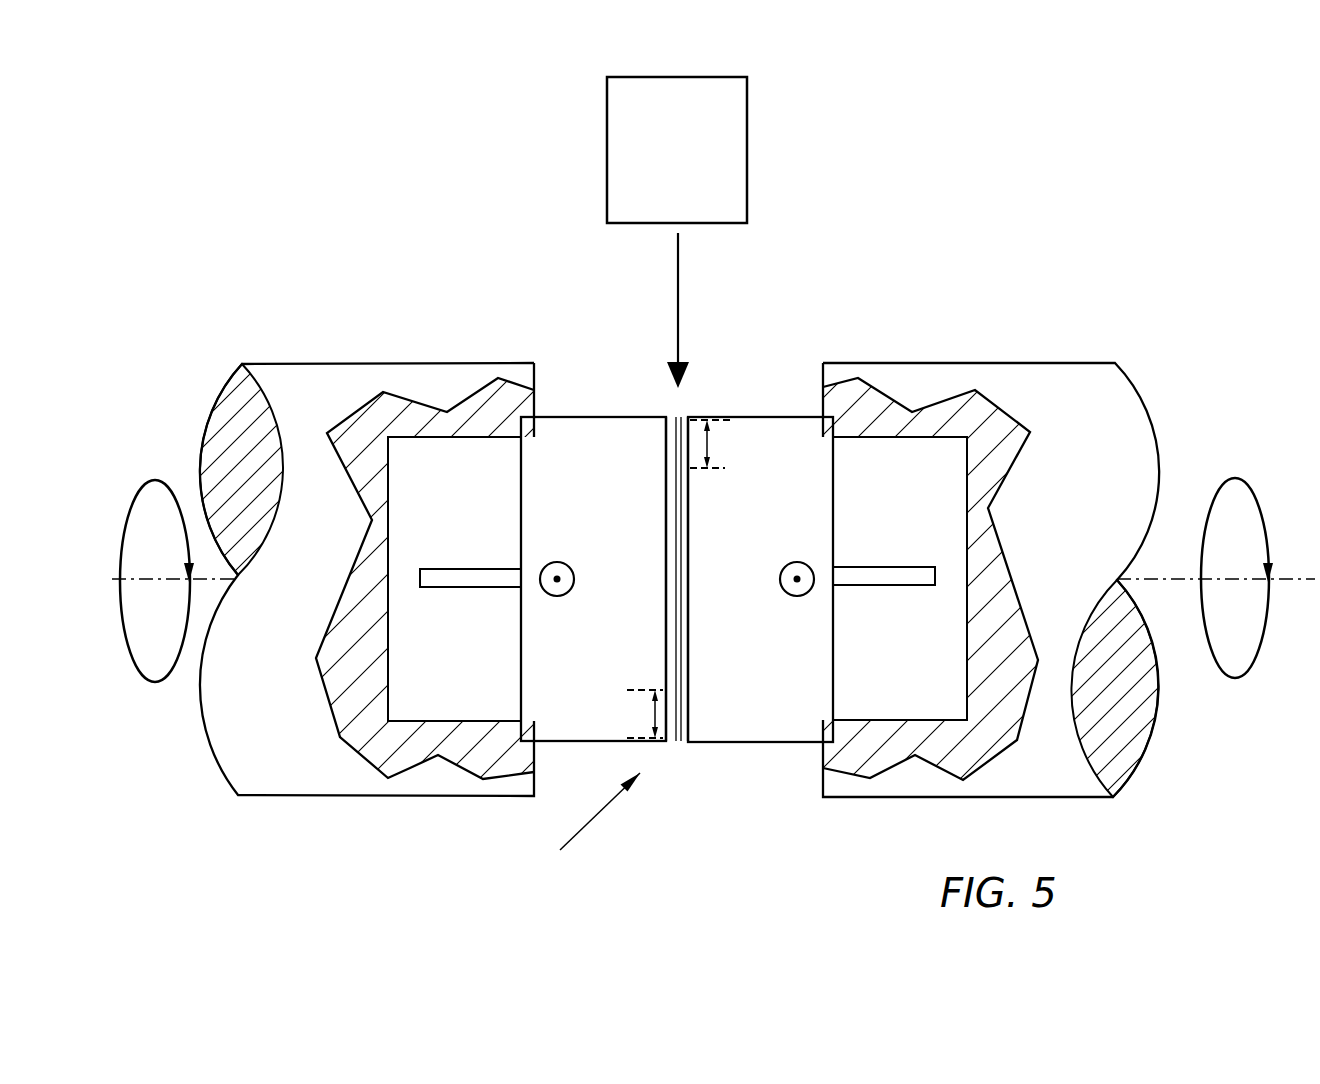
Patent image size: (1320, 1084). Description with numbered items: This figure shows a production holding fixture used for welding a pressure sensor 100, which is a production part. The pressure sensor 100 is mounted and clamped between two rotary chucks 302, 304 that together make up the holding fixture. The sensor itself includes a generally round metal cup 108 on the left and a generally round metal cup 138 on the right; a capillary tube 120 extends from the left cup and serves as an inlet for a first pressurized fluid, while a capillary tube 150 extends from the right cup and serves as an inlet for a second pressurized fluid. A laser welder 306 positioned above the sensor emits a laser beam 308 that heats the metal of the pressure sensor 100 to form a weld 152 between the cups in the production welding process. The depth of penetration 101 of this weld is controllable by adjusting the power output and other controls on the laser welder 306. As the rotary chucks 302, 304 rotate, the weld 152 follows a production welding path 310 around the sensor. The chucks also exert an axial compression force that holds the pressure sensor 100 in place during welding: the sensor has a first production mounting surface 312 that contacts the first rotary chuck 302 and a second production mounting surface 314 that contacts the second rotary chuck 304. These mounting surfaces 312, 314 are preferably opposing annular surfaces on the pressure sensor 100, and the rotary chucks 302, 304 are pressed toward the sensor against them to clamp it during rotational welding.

The pressure sensor 100 is at (666, 630).
The depth of penetration 101 is at (710, 447).
The metal cup 108 is at (623, 501).
The capillary tube 120 is at (478, 569).
The metal cup 138 is at (776, 502).
The capillary tube 150 is at (860, 567).
The weld 152 is at (672, 742).
The first rotary chuck 302 is at (310, 363).
The second rotary chuck 304 is at (1113, 363).
The laser welder 306 is at (697, 177).
The laser beam 308 is at (680, 290).
The production welding path 310 is at (677, 497).
The first production mounting surface 312 is at (497, 420).
The second production mounting surface 314 is at (850, 433).